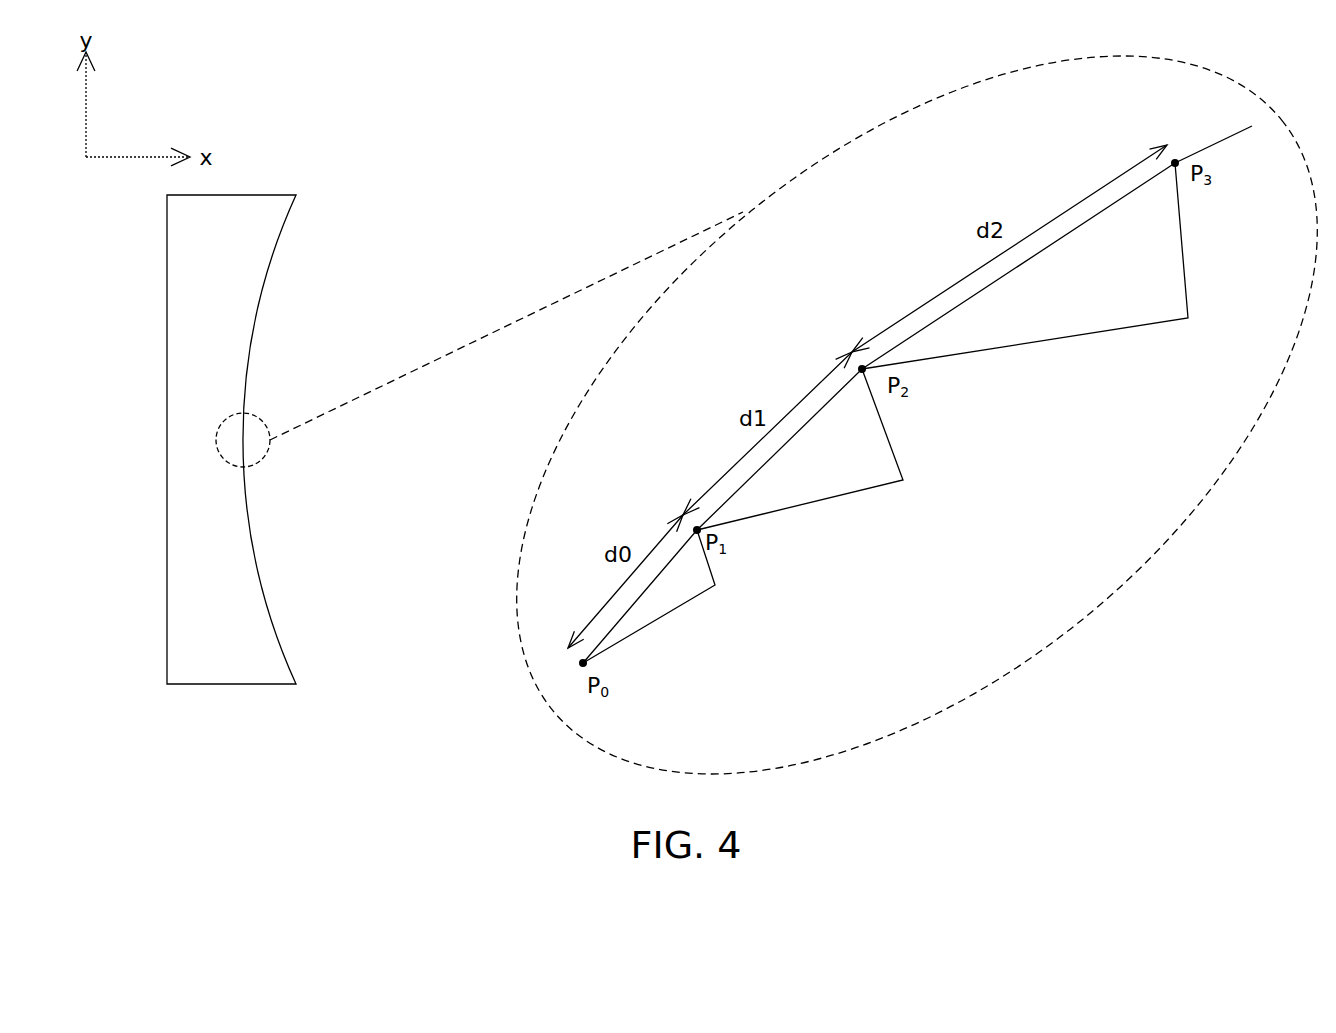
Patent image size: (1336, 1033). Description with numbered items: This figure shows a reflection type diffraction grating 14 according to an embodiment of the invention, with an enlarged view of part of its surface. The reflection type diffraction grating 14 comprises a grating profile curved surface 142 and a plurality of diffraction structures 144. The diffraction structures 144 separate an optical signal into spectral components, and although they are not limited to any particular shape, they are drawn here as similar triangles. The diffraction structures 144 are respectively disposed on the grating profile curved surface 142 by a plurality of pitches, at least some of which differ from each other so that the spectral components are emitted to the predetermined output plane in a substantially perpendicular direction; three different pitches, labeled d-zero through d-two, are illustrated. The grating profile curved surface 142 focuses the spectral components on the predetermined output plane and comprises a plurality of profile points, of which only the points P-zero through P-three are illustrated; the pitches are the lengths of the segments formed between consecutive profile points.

The reflection type diffraction grating 14 is at (289, 206).
The grating profile curved surface 142 is at (1212, 145).
The diffraction structures 144 is at (716, 583).